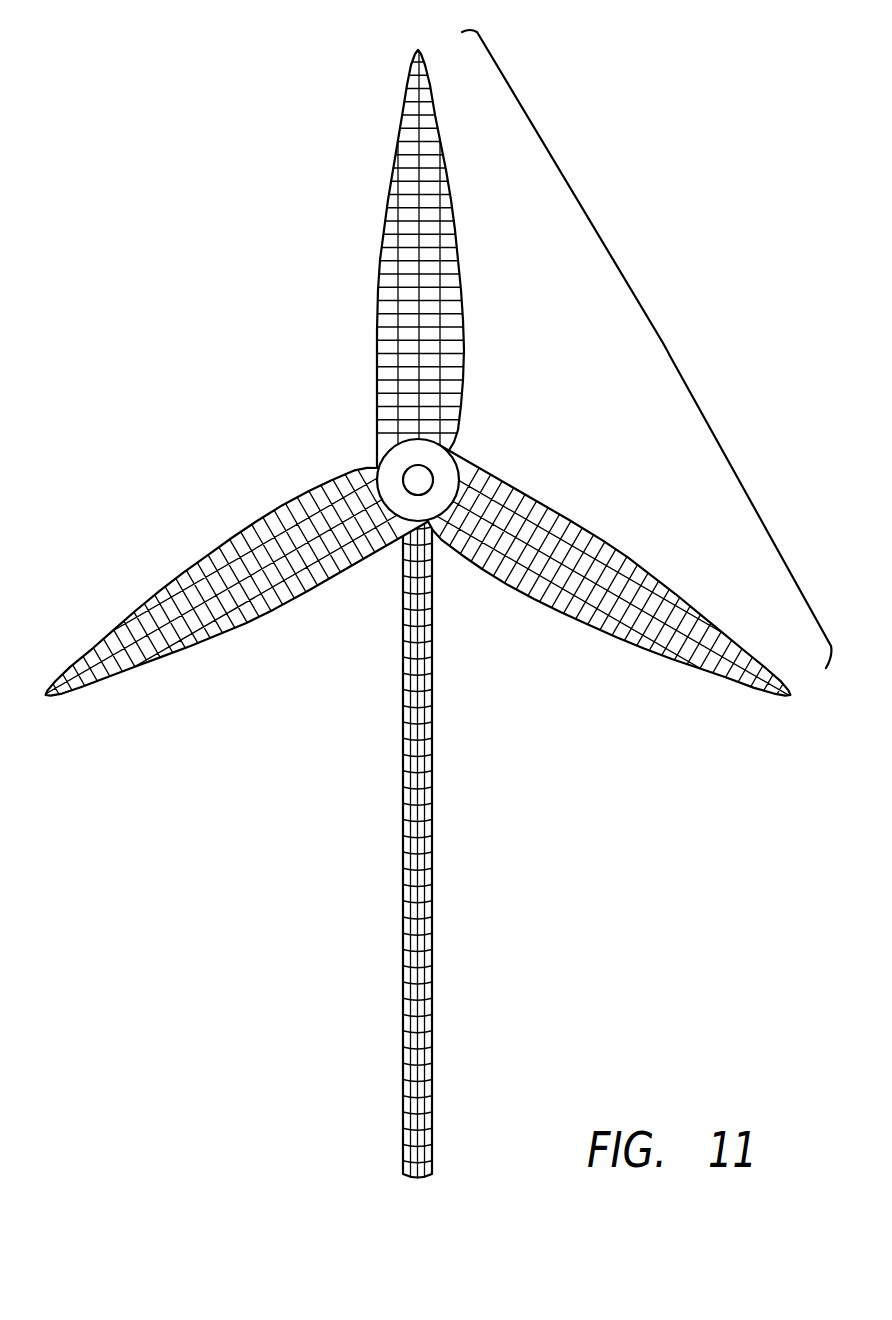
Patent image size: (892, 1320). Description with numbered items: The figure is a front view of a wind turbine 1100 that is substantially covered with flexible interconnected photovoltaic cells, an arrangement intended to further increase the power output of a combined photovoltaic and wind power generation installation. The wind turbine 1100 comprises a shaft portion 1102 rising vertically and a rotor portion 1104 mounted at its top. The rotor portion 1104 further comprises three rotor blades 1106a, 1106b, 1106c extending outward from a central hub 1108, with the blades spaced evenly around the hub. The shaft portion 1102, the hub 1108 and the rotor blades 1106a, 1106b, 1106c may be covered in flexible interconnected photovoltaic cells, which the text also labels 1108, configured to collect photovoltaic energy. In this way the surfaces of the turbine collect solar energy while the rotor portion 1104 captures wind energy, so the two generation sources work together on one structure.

The wind turbine 1100 is at (418, 614).
The shaft portion 1102 is at (418, 810).
The rotor portion 1104 is at (663, 346).
The rotor blade 1106a is at (512, 498).
The rotor blade 1106b is at (448, 320).
The rotor blade 1106c is at (272, 527).
The hub 1108 is at (450, 457).